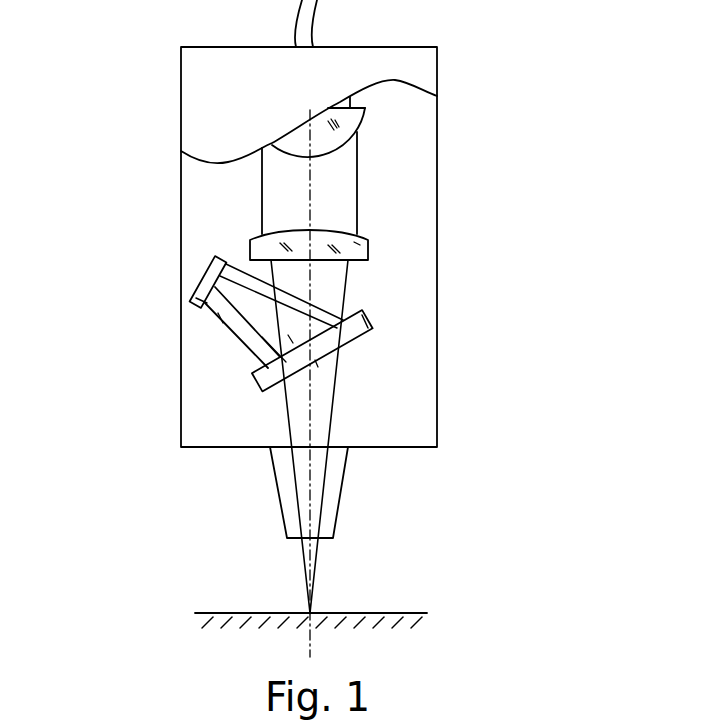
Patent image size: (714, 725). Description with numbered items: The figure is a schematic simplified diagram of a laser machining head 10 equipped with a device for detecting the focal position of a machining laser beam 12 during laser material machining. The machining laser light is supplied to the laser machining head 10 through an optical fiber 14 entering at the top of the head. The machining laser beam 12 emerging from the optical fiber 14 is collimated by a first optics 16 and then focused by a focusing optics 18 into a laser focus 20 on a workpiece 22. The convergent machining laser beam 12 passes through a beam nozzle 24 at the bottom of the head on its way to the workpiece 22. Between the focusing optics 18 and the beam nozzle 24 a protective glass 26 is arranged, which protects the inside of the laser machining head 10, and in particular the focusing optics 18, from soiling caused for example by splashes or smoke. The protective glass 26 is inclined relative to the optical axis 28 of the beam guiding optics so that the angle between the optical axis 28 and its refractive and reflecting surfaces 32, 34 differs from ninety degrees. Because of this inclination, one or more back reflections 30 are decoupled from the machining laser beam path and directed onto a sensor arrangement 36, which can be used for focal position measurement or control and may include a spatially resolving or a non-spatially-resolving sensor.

The laser machining head 10 is at (121, 53).
The machining laser beam 12 is at (338, 191).
The optical fiber 14 is at (300, 24).
The first optics 16 is at (340, 122).
The focusing optics 18 is at (353, 243).
The laser focus 20 is at (312, 612).
The workpiece 22 is at (227, 613).
The beam nozzle 24 is at (340, 498).
The protective glass 26 is at (365, 313).
The optical axis 28 is at (308, 187).
The back reflections 30 is at (222, 317).
The refractive and reflecting surface 32 is at (278, 343).
The refractive and reflecting surface 34 is at (318, 362).
The sensor arrangement 36 is at (197, 282).